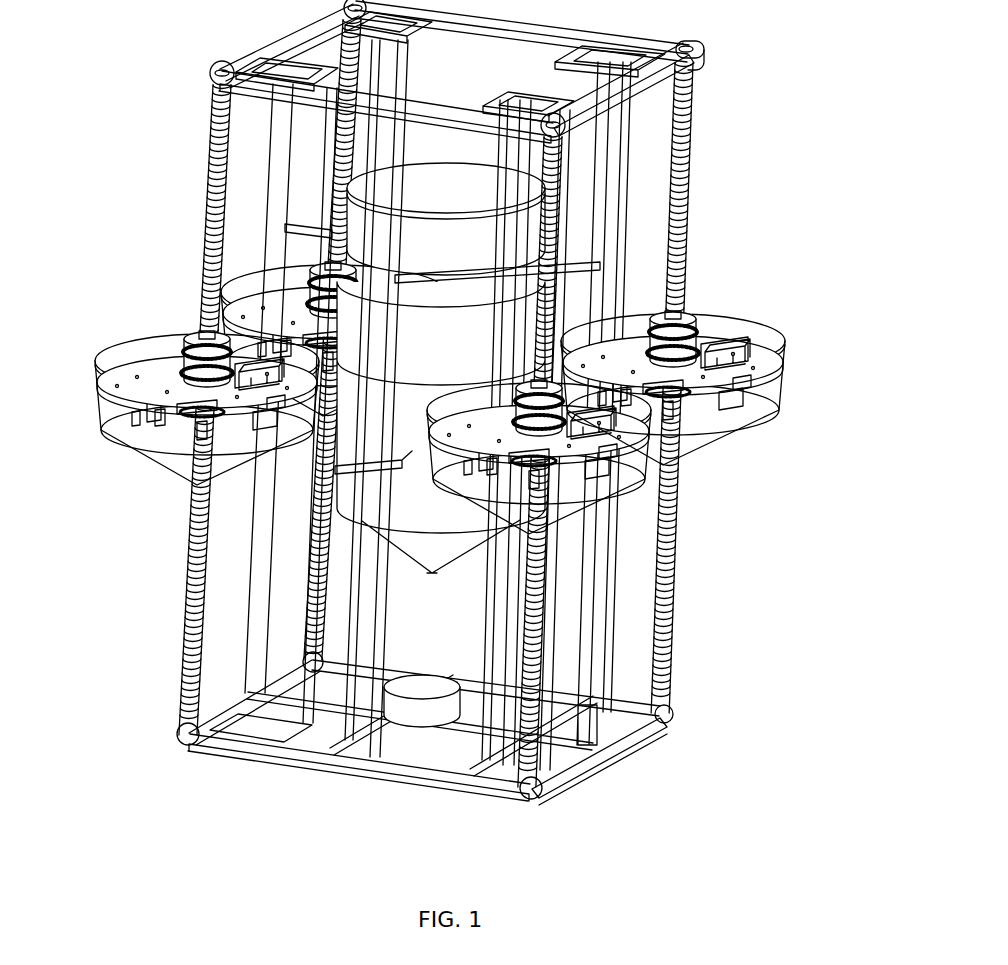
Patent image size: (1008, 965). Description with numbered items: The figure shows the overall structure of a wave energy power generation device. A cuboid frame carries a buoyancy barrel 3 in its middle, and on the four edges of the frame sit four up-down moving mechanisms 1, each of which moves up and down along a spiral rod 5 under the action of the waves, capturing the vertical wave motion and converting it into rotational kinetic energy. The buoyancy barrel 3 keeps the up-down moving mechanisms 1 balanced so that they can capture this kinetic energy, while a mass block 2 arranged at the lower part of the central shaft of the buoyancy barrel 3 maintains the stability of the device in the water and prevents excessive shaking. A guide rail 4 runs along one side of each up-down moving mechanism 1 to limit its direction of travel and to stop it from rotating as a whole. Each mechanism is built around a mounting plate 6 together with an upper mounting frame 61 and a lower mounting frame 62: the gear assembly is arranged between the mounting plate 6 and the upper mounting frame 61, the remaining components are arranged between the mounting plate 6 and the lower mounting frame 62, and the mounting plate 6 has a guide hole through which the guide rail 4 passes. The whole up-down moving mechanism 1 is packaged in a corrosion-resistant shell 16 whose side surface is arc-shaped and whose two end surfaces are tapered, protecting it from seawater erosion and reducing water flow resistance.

The up-down moving mechanism 1 is at (724, 364).
The mass block 2 is at (424, 712).
The buoyancy barrel 3 is at (463, 232).
The guide rail 4 is at (620, 258).
The spiral rod 5 is at (670, 563).
The mounting plate 6 is at (695, 371).
The upper mounting frame 61 is at (732, 317).
The lower mounting frame 62 is at (729, 409).
The corrosion-resistant shell 16 is at (113, 357).